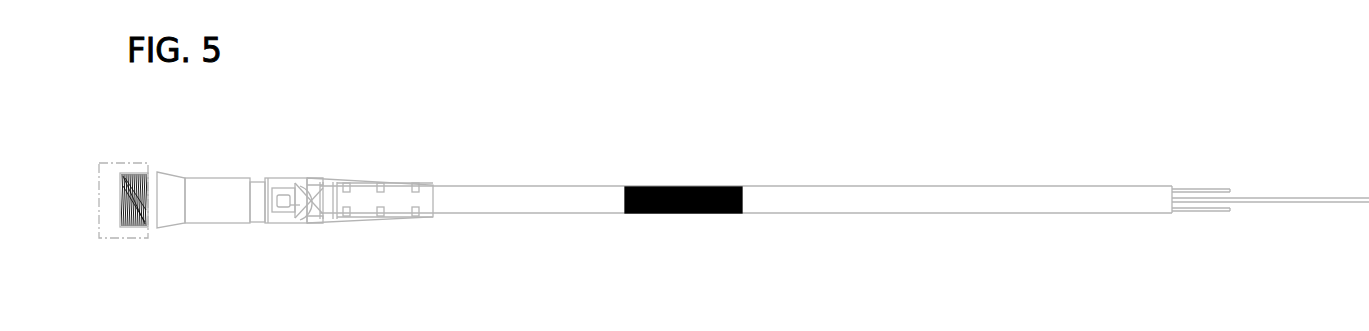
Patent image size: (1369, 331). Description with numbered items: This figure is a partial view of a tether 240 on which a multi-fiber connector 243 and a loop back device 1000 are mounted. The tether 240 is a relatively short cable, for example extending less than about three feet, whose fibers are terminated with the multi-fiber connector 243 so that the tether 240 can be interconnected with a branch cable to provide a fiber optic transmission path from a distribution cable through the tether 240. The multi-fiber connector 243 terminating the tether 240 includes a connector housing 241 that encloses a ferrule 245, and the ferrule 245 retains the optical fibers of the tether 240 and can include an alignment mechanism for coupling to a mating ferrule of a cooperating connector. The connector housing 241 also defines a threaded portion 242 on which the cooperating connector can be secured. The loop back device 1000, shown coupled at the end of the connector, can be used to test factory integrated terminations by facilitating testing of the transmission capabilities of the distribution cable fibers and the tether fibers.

The loop back device 1000 is at (113, 152).
The ferrule 245 is at (142, 200).
The threaded portion 242 is at (133, 228).
The connector housing 241 is at (173, 225).
The multi-fiber connector 243 is at (188, 163).
The tether 240 is at (875, 187).